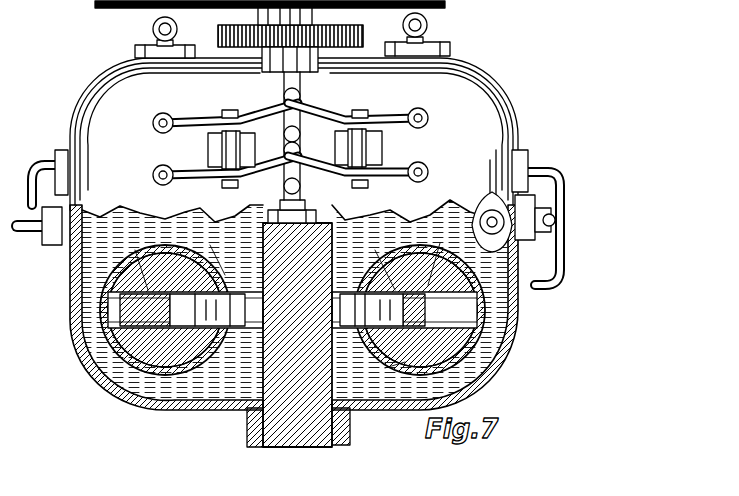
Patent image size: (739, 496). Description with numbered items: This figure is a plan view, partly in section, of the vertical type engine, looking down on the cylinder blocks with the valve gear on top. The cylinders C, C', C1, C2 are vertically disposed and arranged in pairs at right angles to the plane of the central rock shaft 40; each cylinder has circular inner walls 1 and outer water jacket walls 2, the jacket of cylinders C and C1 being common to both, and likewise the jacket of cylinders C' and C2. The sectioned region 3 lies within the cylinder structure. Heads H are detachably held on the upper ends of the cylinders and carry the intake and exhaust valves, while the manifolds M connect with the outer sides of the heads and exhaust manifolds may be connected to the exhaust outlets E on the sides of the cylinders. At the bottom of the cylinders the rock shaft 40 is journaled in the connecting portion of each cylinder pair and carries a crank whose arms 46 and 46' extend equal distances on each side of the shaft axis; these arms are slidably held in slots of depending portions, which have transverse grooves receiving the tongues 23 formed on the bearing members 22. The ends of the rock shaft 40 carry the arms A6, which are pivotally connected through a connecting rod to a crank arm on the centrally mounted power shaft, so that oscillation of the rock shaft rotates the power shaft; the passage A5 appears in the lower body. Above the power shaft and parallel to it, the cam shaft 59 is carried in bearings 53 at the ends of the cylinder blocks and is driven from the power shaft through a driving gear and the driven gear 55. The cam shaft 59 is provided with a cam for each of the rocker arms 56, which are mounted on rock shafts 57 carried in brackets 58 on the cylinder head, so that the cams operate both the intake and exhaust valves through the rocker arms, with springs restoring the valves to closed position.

The circular inner walls 1 is at (78, 297).
The outer water jacket walls 2 is at (72, 346).
The cylinder bore 3 is at (72, 320).
The bearing members 22 is at (322, 256).
The tongues 23 is at (261, 261).
The rock shaft 40 is at (296, 440).
The crank arm 46 is at (167, 282).
The crank arm 46' is at (450, 309).
The cam shaft bearings 53 is at (320, 62).
The driven gear 55 is at (332, 25).
The rocker arms 56 is at (188, 112).
The rock shafts 57 is at (228, 110).
The brackets 58 is at (207, 150).
The cam shaft 59 is at (304, 88).
The passage A5 is at (388, 375).
The arms A6 is at (246, 430).
The cylinder C is at (290, 134).
The cylinder C' is at (513, 136).
The cylinder C1 is at (160, 307).
The cylinder C2 is at (428, 307).
The exhaust outlets E is at (133, 51).
The heads H is at (296, 86).
The manifolds M is at (30, 186).